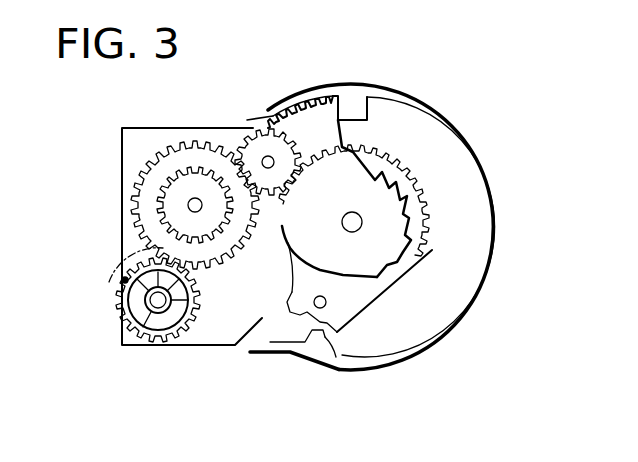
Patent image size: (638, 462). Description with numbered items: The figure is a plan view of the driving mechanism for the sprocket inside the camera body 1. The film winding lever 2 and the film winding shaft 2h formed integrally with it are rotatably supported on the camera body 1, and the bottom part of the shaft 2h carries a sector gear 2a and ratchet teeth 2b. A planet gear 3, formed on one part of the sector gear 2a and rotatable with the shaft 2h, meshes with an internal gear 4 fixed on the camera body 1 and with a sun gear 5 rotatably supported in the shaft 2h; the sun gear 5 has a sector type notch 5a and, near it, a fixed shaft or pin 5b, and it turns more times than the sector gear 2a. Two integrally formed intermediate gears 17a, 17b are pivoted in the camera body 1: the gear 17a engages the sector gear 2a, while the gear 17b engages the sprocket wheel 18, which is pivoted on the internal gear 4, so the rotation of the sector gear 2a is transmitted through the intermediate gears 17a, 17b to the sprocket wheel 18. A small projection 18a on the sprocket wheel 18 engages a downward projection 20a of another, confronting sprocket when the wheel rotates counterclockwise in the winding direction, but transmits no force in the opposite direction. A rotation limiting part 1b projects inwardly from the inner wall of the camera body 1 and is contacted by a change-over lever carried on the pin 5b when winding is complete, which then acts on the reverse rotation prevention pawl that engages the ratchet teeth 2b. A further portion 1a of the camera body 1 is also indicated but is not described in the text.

The camera body 1 is at (463, 148).
The housing bottom portion 1a is at (336, 357).
The rotation limiting part 1b is at (358, 112).
The film winding lever 2 is at (367, 186).
The sector gear 2a is at (317, 123).
The ratchet teeth 2b is at (413, 242).
The film winding shaft 2h is at (334, 265).
The planet gear 3 is at (262, 129).
The internal gear 4 is at (220, 340).
The sun gear 5 is at (341, 294).
The sector type notch 5a is at (302, 320).
The fixed shaft or pin 5b is at (314, 297).
The intermediate gear 17a is at (206, 170).
The intermediate gear 17b is at (182, 142).
The sprocket wheel 18 is at (178, 324).
The small projection 18a is at (180, 293).
The projection 20a is at (123, 300).